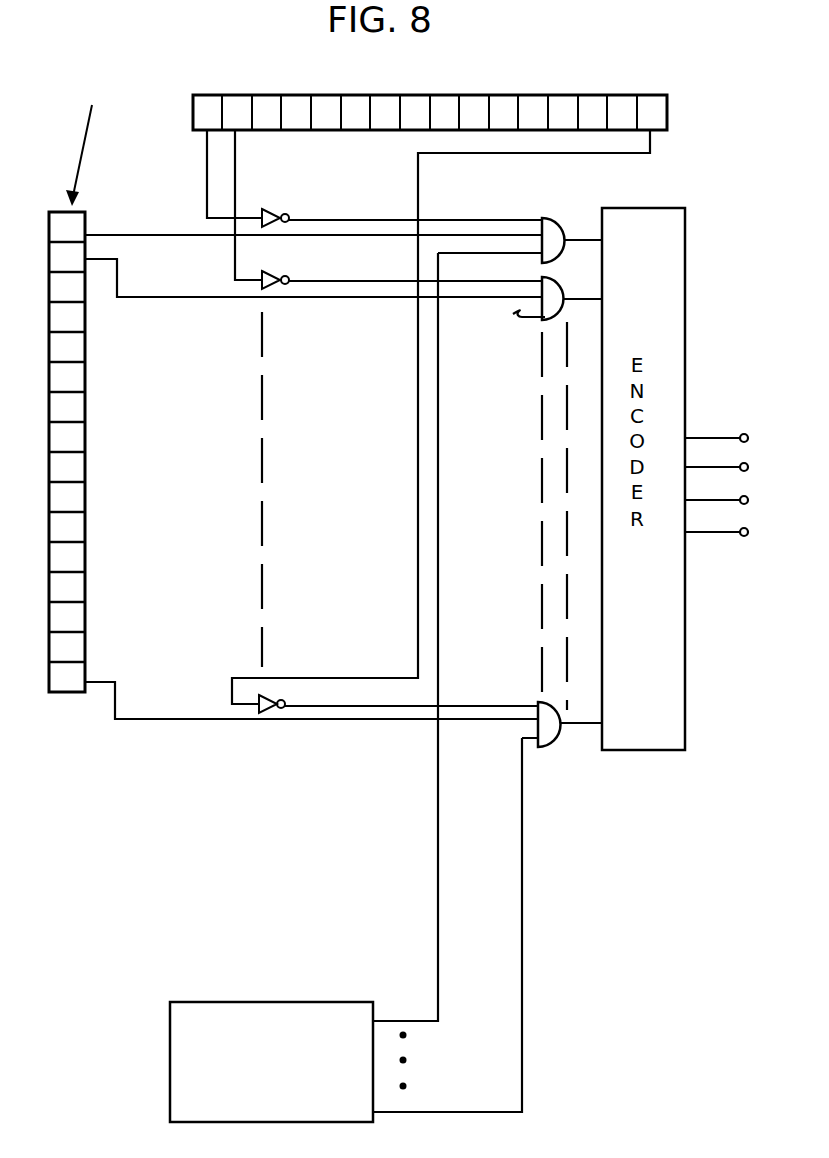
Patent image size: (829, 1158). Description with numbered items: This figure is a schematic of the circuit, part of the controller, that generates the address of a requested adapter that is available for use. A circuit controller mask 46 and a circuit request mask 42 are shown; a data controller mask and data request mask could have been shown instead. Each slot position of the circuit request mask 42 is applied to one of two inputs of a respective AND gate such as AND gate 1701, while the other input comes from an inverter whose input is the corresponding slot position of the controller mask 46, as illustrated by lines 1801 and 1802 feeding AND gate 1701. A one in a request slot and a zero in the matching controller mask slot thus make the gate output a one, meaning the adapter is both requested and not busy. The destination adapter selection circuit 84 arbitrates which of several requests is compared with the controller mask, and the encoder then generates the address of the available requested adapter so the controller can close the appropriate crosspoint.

The circuit controller mask 46 is at (667, 113).
The circuit request mask 42 is at (65, 693).
The destination adapter selection circuit 84 is at (170, 1070).
The AND gate 1701 is at (553, 217).
The line 1801 is at (307, 218).
The line 1802 is at (307, 240).